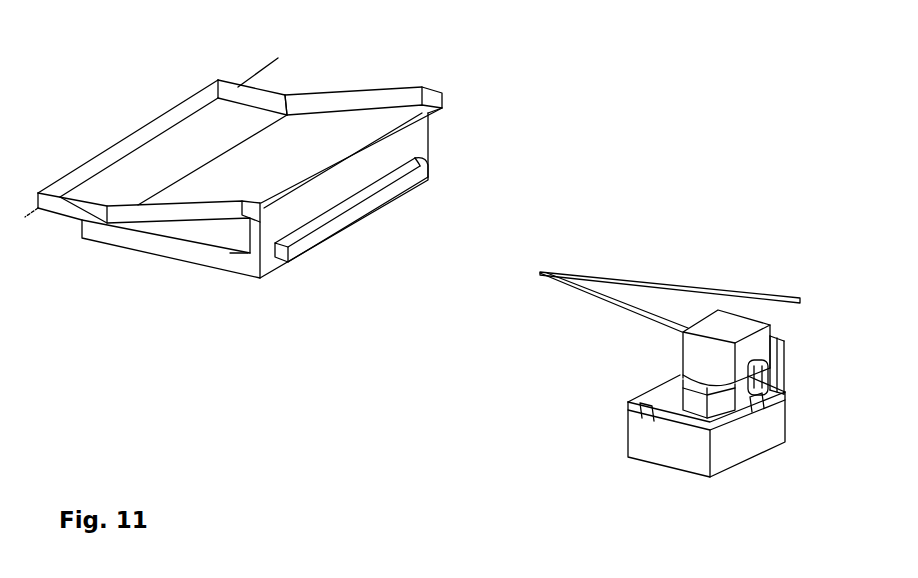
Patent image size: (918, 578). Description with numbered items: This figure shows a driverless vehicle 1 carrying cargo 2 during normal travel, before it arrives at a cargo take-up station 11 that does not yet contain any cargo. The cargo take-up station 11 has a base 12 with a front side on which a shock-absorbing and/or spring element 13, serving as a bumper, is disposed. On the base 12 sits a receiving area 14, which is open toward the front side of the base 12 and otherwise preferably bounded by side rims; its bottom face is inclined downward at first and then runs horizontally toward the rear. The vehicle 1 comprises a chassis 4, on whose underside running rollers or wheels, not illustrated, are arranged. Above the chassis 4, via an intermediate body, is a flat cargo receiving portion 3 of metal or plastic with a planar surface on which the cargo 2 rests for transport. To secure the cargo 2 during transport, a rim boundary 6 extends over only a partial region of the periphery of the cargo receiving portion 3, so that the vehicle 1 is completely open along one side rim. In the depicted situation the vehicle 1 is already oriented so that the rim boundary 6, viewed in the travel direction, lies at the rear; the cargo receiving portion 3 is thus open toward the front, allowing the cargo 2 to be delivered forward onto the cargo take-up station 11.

The cargo take-up station 11 is at (477, 75).
The base 12 is at (197, 260).
The shock-absorbing and/or spring element 13 is at (317, 235).
The receiving area 14 is at (285, 97).
The vehicle 1 is at (565, 398).
The cargo 2 is at (695, 354).
The cargo receiving portion 3 is at (640, 400).
The chassis 4 is at (662, 452).
The rim boundary 6 is at (762, 380).